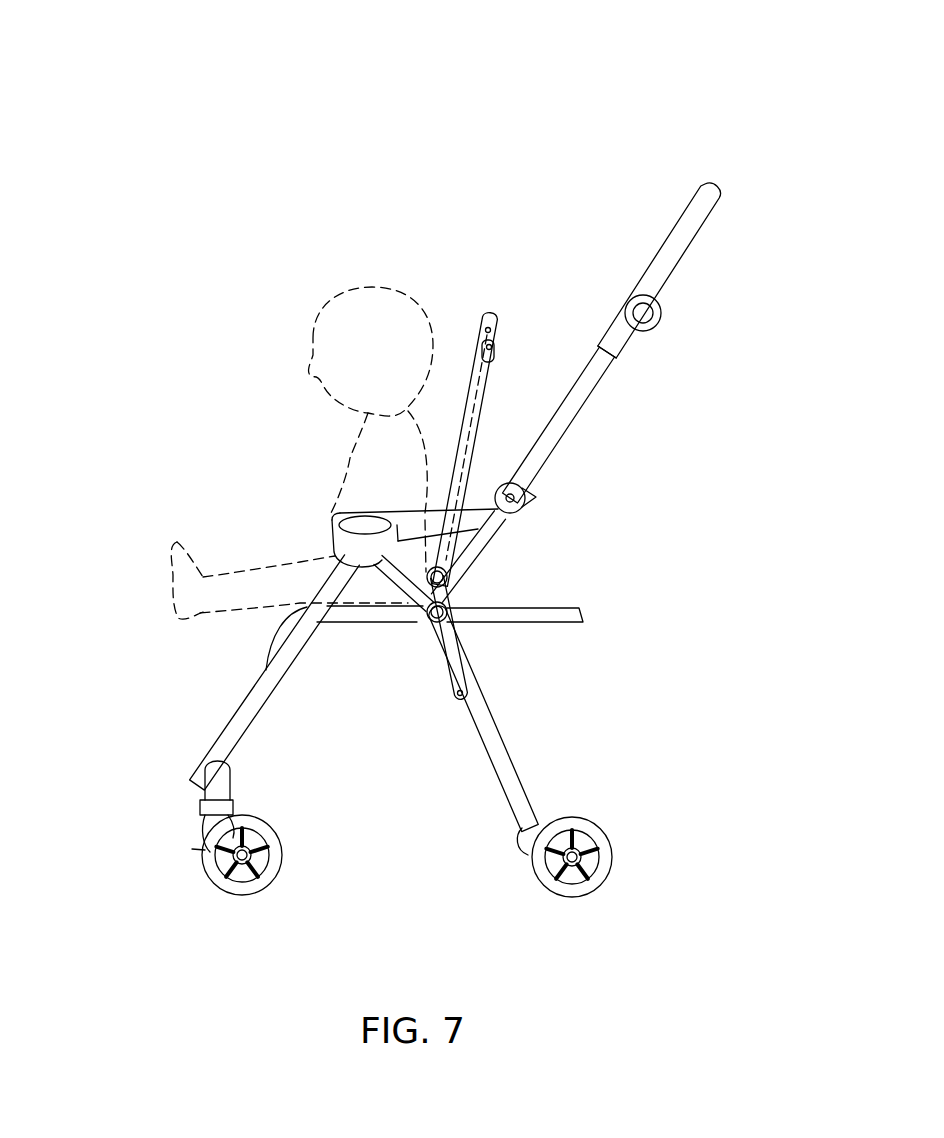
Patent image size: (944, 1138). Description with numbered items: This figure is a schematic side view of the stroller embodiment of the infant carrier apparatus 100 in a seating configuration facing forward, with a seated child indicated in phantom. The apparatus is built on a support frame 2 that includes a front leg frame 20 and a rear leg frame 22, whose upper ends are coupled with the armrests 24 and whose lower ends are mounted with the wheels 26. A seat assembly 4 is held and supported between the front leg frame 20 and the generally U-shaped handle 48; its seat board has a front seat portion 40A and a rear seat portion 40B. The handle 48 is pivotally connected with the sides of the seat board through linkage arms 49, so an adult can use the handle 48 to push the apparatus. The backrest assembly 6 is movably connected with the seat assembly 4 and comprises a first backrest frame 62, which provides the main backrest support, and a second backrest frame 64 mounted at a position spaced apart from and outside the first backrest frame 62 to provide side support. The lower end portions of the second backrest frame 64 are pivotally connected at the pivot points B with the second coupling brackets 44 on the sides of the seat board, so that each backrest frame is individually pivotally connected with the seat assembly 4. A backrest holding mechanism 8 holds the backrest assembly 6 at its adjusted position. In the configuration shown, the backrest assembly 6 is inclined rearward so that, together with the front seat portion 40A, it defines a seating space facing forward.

The infant carrier apparatus 100 is at (160, 72).
The support frame 2 is at (403, 783).
The seat assembly 4 is at (612, 626).
The backrest assembly 6 is at (535, 322).
The backrest holding mechanism 8 is at (503, 310).
The front leg frame 20 is at (243, 720).
The rear leg frame 22 is at (468, 712).
The armrest 24 is at (342, 520).
The wheel 26 is at (274, 852).
The front seat portion 40A is at (350, 620).
The rear seat portion 40B is at (548, 620).
The second coupling bracket 44 is at (456, 598).
The handle 48 is at (568, 418).
The linkage arm 49 is at (453, 661).
The first backrest frame 62 is at (468, 448).
The second backrest frame 64 is at (494, 339).
The pivot point B is at (448, 573).